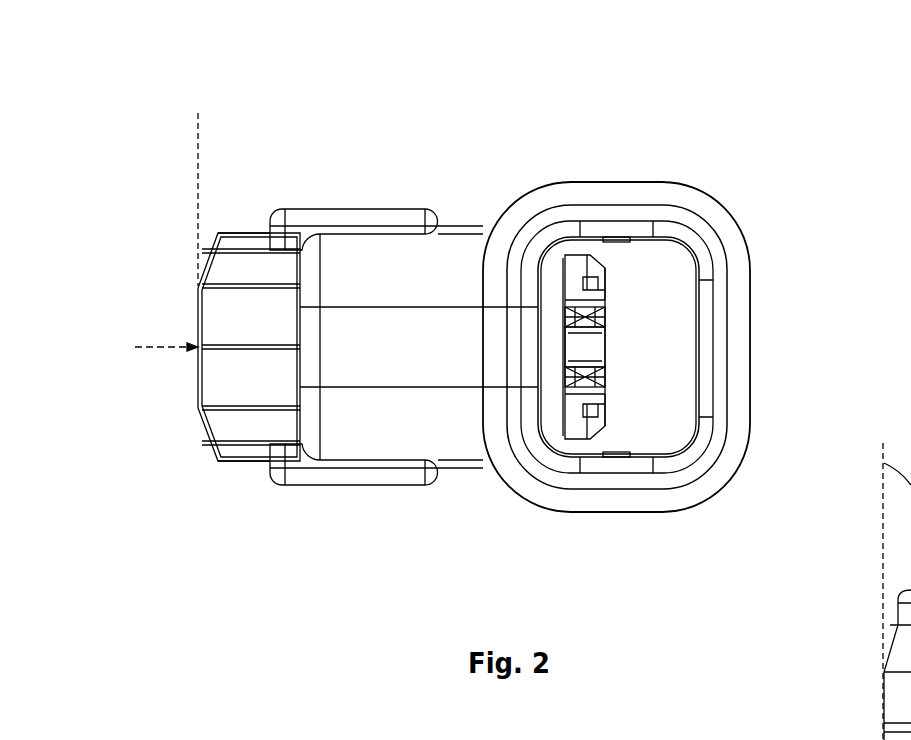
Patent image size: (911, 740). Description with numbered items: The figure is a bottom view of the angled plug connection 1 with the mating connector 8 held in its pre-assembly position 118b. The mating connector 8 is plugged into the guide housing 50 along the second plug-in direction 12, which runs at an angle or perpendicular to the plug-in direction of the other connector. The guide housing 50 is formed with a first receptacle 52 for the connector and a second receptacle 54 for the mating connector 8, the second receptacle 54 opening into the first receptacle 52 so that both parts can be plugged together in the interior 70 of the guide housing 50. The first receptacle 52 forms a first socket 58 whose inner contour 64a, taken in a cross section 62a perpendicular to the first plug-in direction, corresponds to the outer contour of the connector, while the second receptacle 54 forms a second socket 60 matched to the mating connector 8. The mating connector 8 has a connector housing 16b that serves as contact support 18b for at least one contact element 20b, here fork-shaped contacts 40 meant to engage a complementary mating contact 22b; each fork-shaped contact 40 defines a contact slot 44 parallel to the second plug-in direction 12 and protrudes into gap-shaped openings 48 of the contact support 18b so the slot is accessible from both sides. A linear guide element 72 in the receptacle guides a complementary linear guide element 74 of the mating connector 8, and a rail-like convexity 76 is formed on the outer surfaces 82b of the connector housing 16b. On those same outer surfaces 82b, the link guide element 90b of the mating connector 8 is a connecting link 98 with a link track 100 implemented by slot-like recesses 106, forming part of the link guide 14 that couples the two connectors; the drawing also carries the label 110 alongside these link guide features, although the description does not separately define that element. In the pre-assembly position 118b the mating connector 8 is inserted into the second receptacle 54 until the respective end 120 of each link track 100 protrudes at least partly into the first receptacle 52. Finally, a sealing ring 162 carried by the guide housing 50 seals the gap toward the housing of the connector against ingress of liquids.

The angled plug connection 1 is at (787, 93).
The mating connector 8 is at (195, 472).
The second plug-in direction 12 is at (152, 338).
The link guide 14 is at (630, 346).
The connector housing 16b is at (736, 334).
The contact support 18b is at (582, 348).
The contact element 20b is at (639, 346).
The mating contact 22b is at (639, 346).
The fork-shaped contact 40 is at (590, 255).
The contact slot 44 is at (565, 322).
The gap-shaped opening 48 is at (616, 322).
The guide housing 50 is at (752, 213).
The first receptacle 52 is at (655, 399).
The second receptacle 54 is at (249, 387).
The first socket 58 is at (667, 434).
The second socket 60 is at (260, 472).
The cross section 62a is at (678, 372).
The inner contour 64a is at (706, 462).
The interior 70 is at (660, 279).
The linear guide element 72 is at (618, 237).
The complementary linear guide element 74 is at (232, 232).
The rail-like convexity 76 is at (389, 356).
The outer surface 82b is at (262, 245).
The link guide element 90b is at (630, 346).
The connecting link 98 is at (630, 346).
The link track 100 is at (630, 346).
The slot-like recess 106 is at (630, 346).
The holder 110 is at (588, 257).
The pre-assembly position 118b is at (195, 145).
The end of link track 120 is at (567, 277).
The sealing ring 162 is at (703, 263).